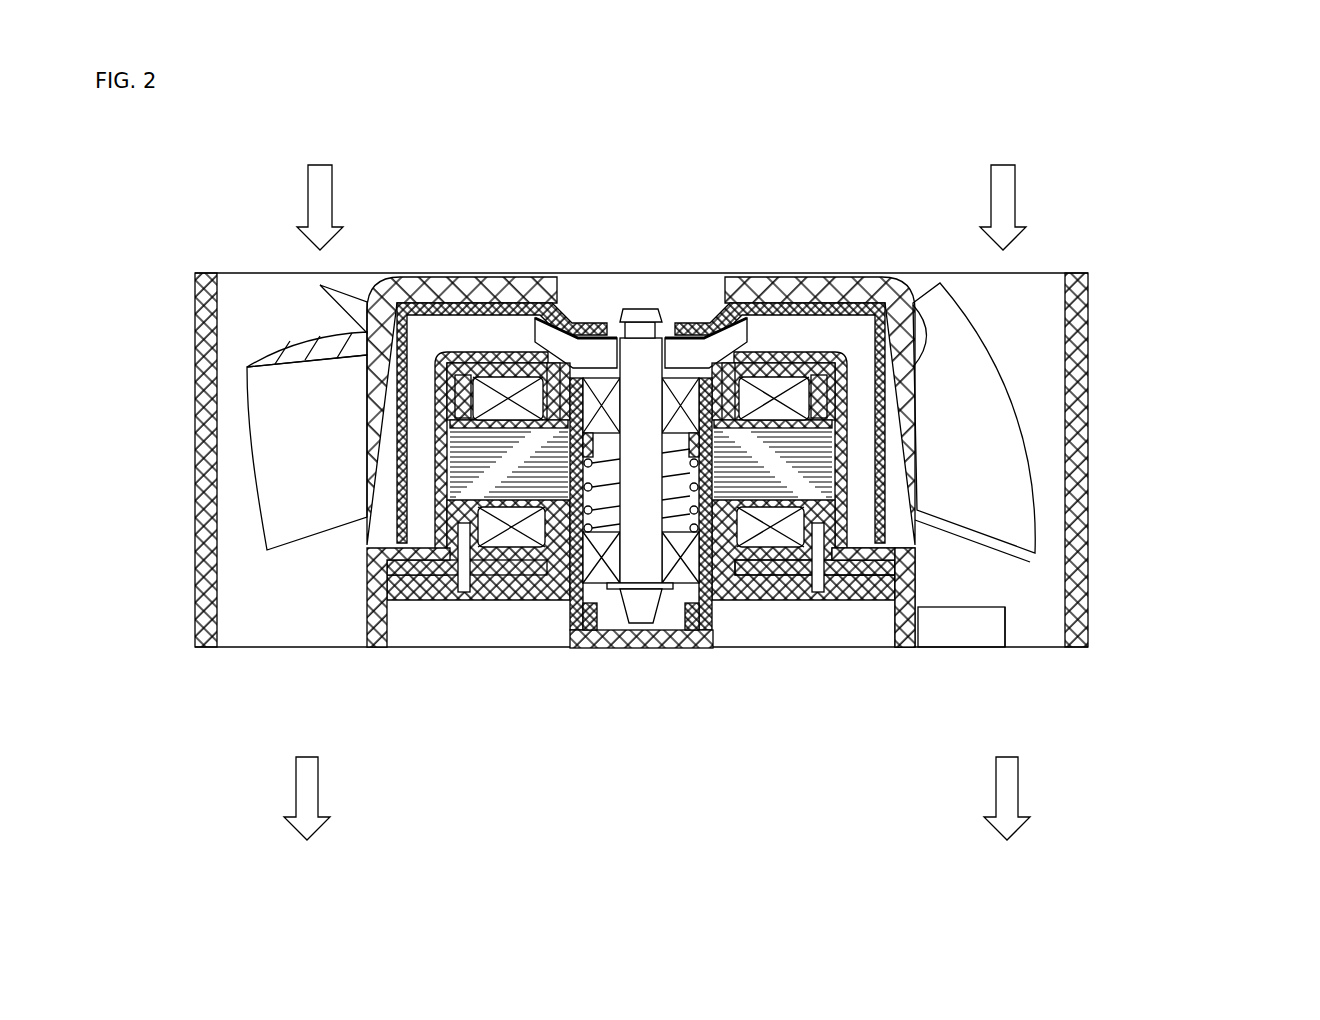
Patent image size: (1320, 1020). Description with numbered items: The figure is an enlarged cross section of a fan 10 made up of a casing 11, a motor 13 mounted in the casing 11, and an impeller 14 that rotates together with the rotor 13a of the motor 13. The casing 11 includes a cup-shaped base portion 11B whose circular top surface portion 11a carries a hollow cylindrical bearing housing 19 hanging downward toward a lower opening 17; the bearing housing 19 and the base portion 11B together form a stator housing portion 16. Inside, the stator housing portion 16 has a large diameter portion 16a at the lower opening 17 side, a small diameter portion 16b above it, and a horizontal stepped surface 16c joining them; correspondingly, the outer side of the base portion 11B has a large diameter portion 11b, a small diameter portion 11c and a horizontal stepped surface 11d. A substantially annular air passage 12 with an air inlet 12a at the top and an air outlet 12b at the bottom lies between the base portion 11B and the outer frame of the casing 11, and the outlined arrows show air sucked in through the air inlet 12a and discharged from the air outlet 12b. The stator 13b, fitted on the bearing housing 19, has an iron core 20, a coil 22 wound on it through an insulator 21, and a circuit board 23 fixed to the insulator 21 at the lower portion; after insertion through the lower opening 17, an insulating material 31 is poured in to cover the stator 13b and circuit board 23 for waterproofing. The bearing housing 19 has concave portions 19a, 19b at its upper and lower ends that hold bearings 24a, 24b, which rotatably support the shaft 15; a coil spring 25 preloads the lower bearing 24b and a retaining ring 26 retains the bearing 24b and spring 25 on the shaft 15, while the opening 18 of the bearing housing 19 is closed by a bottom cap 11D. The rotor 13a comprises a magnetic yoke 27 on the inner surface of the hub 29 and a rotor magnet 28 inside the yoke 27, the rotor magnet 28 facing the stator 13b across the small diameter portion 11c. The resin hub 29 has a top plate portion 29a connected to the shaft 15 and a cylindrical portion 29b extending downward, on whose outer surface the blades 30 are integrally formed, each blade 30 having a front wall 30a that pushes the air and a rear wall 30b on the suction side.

The fan 10 is at (790, 212).
The casing 11 is at (1100, 617).
The top surface portion 11a is at (815, 338).
The large diameter portion 11b is at (930, 627).
The small diameter portion 11c is at (848, 582).
The horizontal stepped surface 11d is at (905, 540).
The base portion 11B is at (980, 620).
The bottom cap 11D is at (636, 638).
The air passage 12 is at (270, 285).
The air inlet 12a is at (230, 267).
The air outlet 12b is at (243, 650).
The motor 13 is at (1246, 420).
The rotor 13a is at (1178, 500).
The stator 13b is at (1178, 383).
The impeller 14 is at (605, 122).
The shaft 15 is at (625, 358).
The stator housing portion 16 is at (750, 622).
The large diameter portion 16a is at (882, 630).
The small diameter portion 16b is at (792, 567).
The horizontal stepped surface 16c is at (820, 522).
The lower opening 17 is at (400, 640).
The opening 18 is at (603, 610).
The bearing housing 19 is at (718, 640).
The concave portion 19a is at (665, 378).
The concave portion 19b is at (680, 602).
The iron core 20 is at (845, 495).
The insulator 21 is at (825, 462).
The coil 22 is at (797, 395).
The circuit board 23 is at (1010, 612).
The bearing 24a is at (687, 385).
The bearing 24b is at (586, 562).
The coil spring 25 is at (602, 527).
The retaining ring 26 is at (655, 592).
The magnetic yoke 27 is at (860, 515).
The rotor magnet 28 is at (840, 510).
The hub 29 is at (465, 303).
The top plate portion 29a is at (770, 303).
The cylindrical portion 29b is at (913, 303).
The blade 30 is at (425, 275).
The front wall 30a is at (270, 457).
The rear wall 30b is at (262, 348).
The insulating material 31 is at (430, 600).